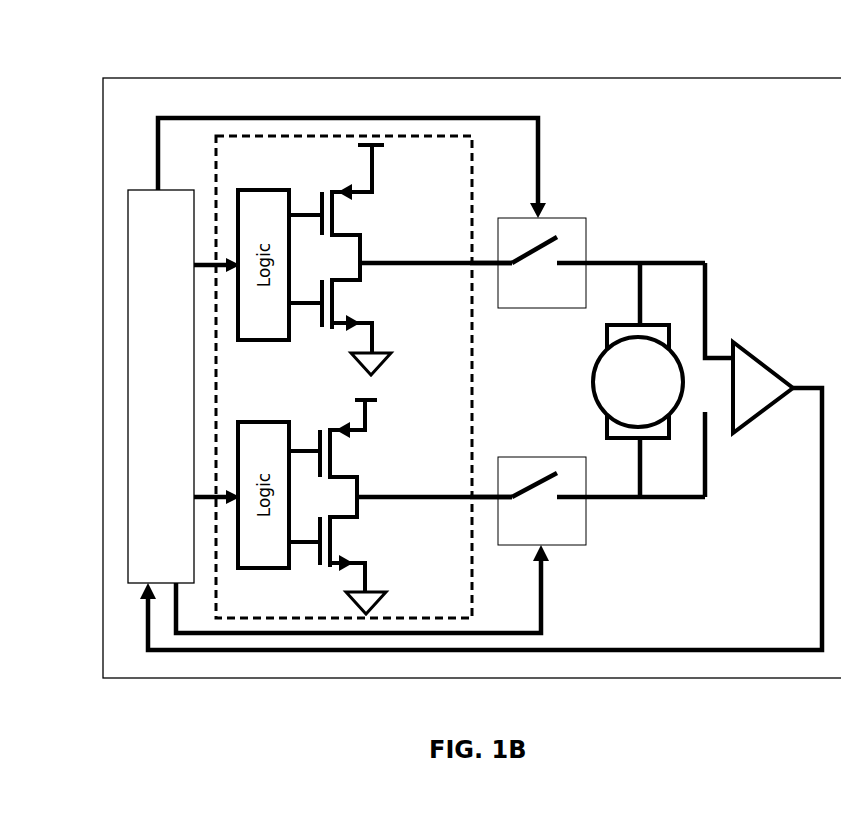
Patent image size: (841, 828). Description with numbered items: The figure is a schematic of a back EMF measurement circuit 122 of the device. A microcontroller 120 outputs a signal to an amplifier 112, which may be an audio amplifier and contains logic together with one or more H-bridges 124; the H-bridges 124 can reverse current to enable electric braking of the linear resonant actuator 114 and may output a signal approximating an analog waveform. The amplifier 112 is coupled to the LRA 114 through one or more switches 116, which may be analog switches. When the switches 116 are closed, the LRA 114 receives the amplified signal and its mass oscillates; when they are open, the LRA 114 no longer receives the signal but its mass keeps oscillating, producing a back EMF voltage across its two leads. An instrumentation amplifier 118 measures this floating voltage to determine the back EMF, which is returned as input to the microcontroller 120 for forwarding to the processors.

The amplifier 112 is at (320, 132).
The linear resonant actuator 114 is at (638, 380).
The switches 116 is at (585, 218).
The instrumentation amplifier 118 is at (760, 354).
The microcontroller 120 is at (128, 330).
The back EMF measurement circuit 122 is at (170, 75).
The H-bridges 124 is at (362, 262).